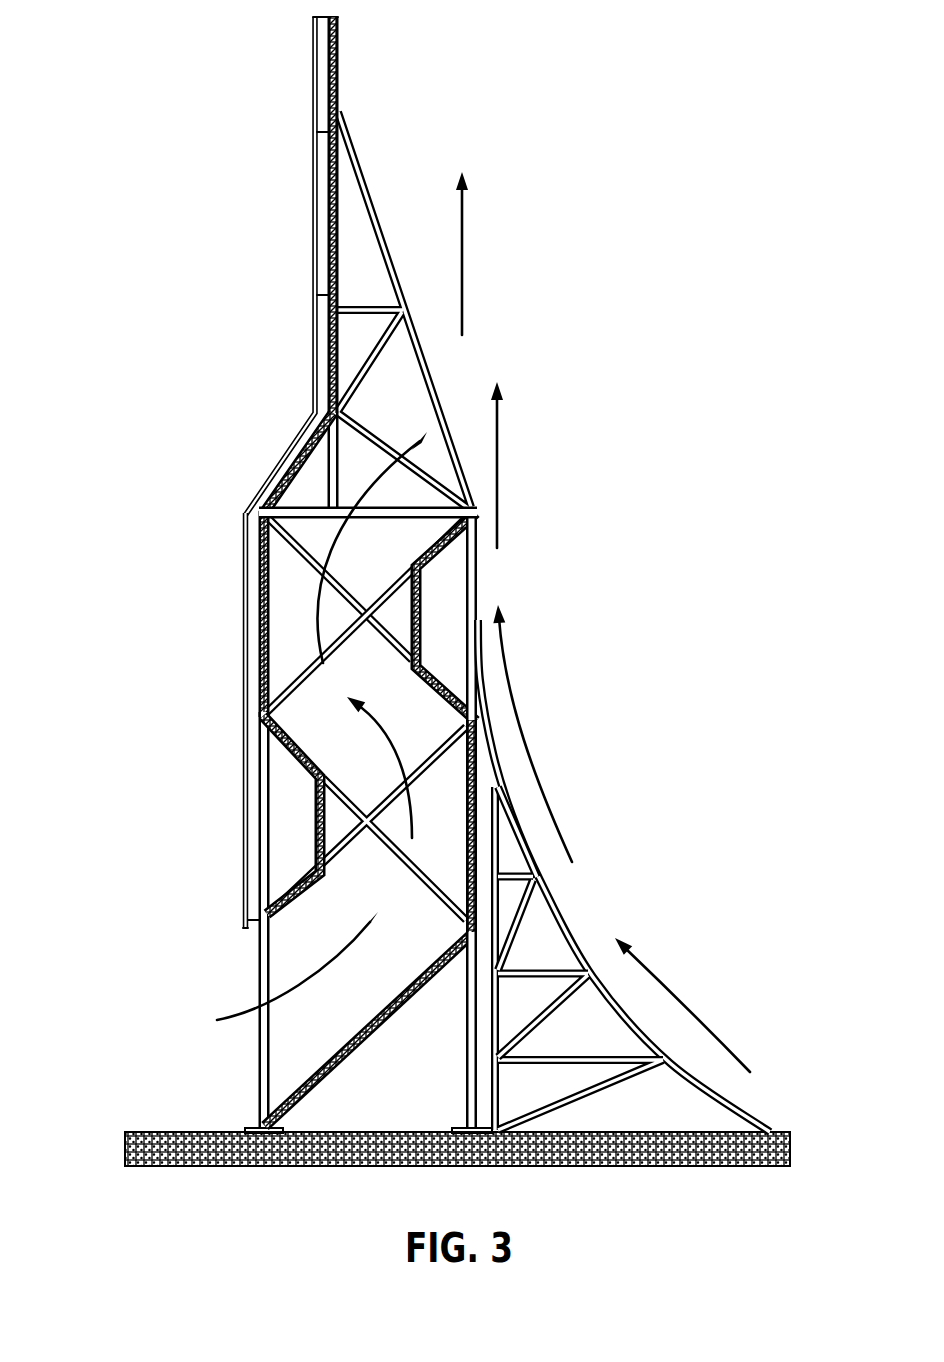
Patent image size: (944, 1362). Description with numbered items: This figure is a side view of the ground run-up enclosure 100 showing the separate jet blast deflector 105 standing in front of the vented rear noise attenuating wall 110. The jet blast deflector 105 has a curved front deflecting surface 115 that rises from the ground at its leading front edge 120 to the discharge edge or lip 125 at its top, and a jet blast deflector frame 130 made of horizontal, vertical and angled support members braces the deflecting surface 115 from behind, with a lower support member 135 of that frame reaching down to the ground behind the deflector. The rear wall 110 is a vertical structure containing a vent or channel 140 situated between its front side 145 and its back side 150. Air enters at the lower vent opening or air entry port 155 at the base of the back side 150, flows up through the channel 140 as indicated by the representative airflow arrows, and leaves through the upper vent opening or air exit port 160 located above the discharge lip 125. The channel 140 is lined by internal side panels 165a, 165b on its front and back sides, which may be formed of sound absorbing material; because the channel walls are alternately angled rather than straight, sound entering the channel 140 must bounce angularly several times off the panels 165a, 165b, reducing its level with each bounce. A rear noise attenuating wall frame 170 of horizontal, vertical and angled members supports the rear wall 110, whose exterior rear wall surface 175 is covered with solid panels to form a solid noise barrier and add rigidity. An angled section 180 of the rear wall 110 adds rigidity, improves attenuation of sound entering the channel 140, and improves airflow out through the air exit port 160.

The ground run-up enclosure 100 is at (140, 124).
The jet blast deflector 105 is at (695, 1049).
The vented rear noise attenuating wall 110 is at (273, 463).
The front deflecting surface 115 is at (578, 938).
The leading front edge 120 is at (772, 1132).
The discharge edge or lip 125 is at (480, 658).
The jet blast deflector frame 130 is at (553, 1017).
The support truss lower brace 135 is at (500, 1107).
The channel 140 is at (312, 712).
The front side 145 is at (477, 567).
The back side 150 is at (245, 525).
The lower vent opening or air entry port 155 is at (258, 1037).
The upper vent opening or air exit port 160 is at (393, 383).
The internal side panel 165a is at (297, 1090).
The internal side panel 165b is at (292, 887).
The rear noise attenuating wall frame 170 is at (310, 663).
The exterior rear wall surface 175 is at (256, 828).
The angled section 180 is at (272, 490).